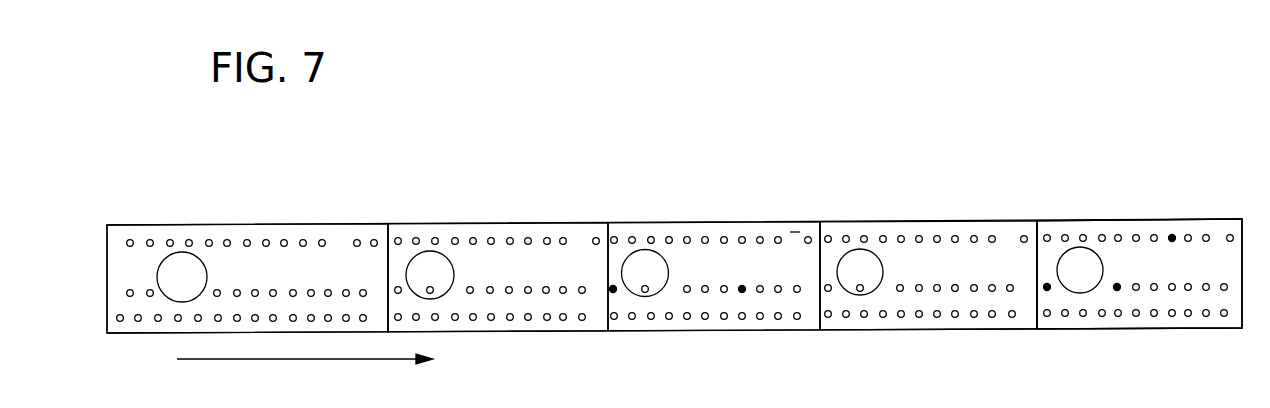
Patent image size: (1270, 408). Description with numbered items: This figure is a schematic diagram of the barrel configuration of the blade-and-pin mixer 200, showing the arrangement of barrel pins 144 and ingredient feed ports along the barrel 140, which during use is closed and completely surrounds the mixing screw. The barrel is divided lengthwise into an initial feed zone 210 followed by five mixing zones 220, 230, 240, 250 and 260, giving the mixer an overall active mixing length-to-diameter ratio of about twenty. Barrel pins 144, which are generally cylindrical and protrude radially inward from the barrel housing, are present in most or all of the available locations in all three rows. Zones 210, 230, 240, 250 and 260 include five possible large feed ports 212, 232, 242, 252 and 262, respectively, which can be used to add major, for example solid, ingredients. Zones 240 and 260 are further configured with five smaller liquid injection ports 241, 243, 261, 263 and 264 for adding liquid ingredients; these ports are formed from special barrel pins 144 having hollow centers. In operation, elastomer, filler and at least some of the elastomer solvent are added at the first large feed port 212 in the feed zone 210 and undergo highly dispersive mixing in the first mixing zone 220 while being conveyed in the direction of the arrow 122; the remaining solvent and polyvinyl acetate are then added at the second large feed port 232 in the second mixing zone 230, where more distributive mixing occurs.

The mixer 200 is at (1208, 215).
The initial feed zone 210 is at (197, 222).
The first mixing zone 220 is at (328, 222).
The second mixing zone 230 is at (487, 222).
The mixing zone 240 is at (661, 222).
The mixing zone 250 is at (949, 220).
The mixing zone 260 is at (1088, 219).
The first large feed port 212 is at (187, 282).
The second large feed port 232 is at (441, 279).
The large feed port 242 is at (657, 278).
The large feed port 252 is at (878, 276).
The large feed port 262 is at (1097, 275).
The liquid injection port 241 is at (612, 288).
The liquid injection port 243 is at (743, 288).
The liquid injection port 261 is at (1046, 287).
The liquid injection port 263 is at (1117, 290).
The liquid injection port 264 is at (1173, 241).
The barrel pins 144 is at (689, 238).
The barrel 140 is at (796, 234).
The arrow (direction of conveyance) 122 is at (307, 362).